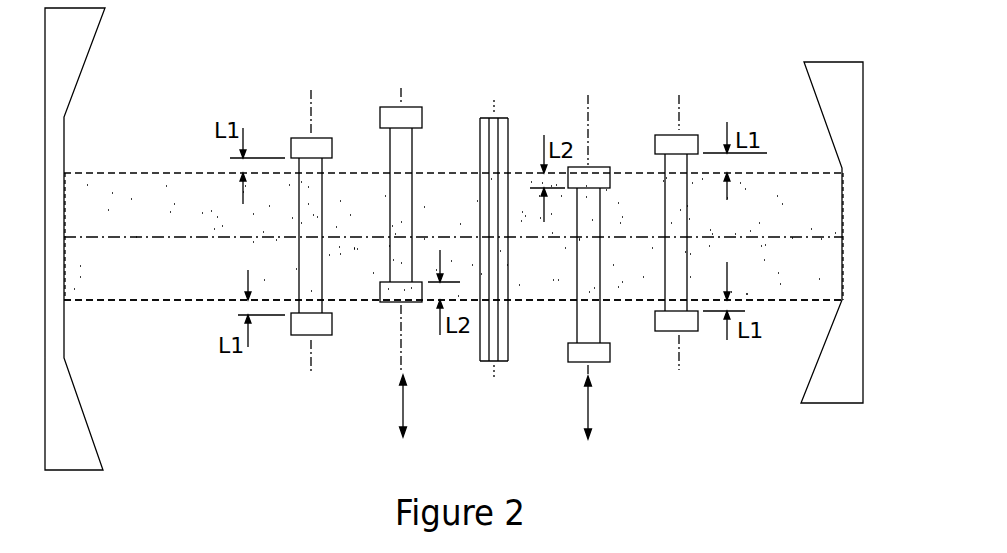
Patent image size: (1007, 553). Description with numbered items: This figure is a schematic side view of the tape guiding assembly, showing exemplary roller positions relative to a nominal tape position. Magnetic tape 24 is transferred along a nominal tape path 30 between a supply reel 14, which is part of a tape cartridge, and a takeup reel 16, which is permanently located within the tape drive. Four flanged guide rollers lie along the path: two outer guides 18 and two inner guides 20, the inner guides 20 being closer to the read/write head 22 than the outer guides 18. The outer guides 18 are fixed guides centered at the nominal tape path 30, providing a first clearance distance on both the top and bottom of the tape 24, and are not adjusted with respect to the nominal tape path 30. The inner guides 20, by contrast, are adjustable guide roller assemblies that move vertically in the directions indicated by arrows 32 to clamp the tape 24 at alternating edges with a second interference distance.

The supply reel 14 is at (45, 445).
The takeup reel 16 is at (864, 78).
The outer guides 18 is at (300, 138).
The inner guides 20 is at (417, 107).
The read/write head 22 is at (508, 118).
The magnetic tape 24 is at (127, 173).
The nominal tape path 30 is at (131, 302).
The arrows 32 is at (400, 402).